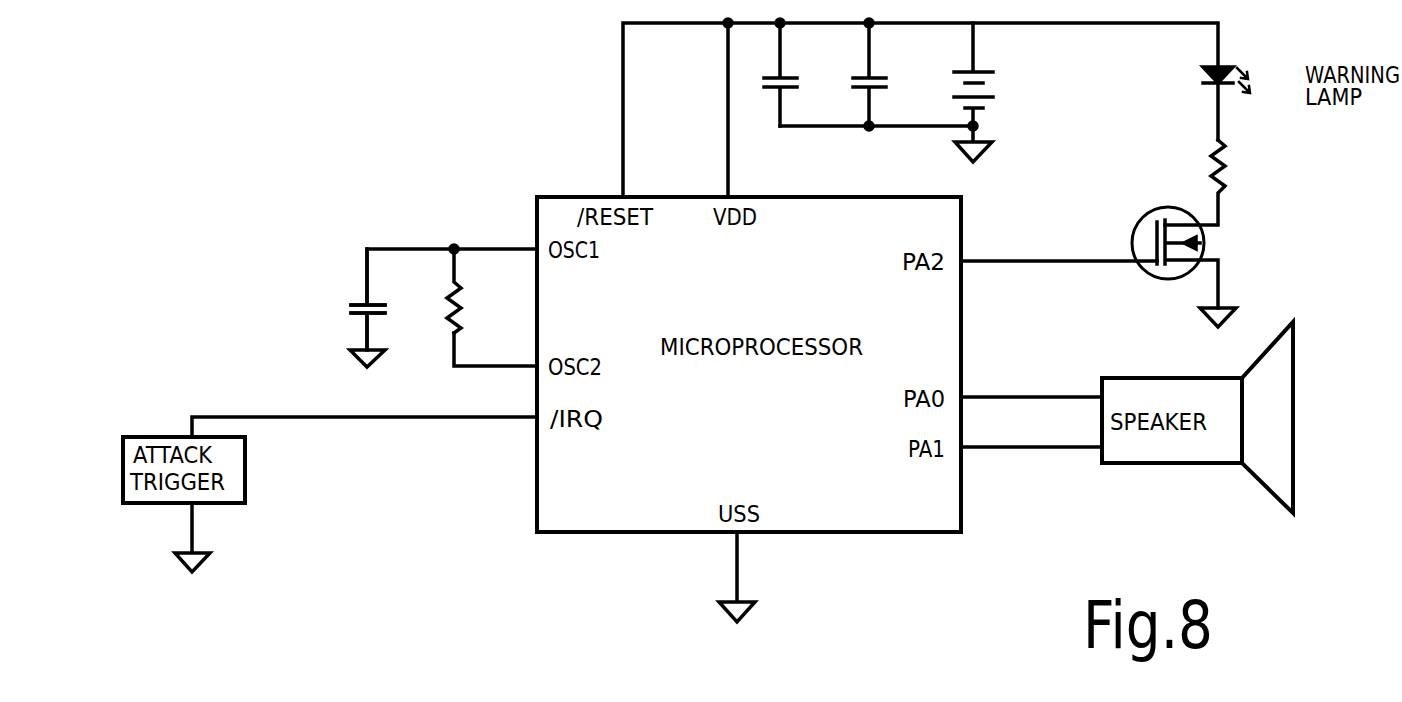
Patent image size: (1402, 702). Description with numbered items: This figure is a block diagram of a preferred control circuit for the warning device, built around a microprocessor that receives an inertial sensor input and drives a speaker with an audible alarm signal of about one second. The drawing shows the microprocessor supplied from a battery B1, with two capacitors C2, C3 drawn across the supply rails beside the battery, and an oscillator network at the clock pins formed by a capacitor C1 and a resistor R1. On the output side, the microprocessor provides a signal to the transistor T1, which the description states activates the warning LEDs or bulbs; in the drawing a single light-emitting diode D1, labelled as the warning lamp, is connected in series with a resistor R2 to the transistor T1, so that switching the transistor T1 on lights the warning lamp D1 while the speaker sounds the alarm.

The oscillator capacitor C1 is at (382, 299).
The supply decoupling capacitor C2 is at (883, 74).
The supply decoupling capacitor C3 is at (795, 74).
The oscillator resistor R1 is at (470, 291).
The warning lamp series resistor R2 is at (1215, 182).
The battery B1 is at (988, 74).
The warning lamp LED D1 is at (1245, 94).
The transistor T1 is at (1184, 250).